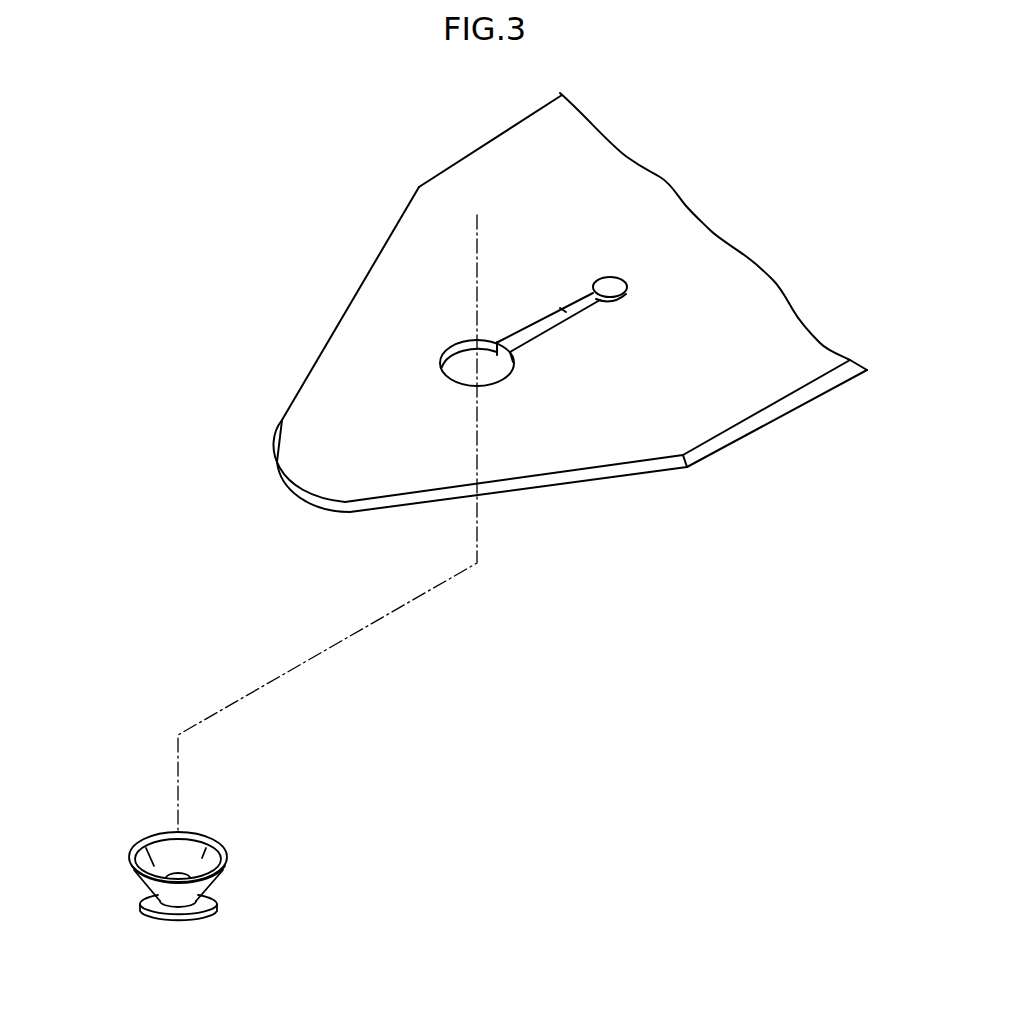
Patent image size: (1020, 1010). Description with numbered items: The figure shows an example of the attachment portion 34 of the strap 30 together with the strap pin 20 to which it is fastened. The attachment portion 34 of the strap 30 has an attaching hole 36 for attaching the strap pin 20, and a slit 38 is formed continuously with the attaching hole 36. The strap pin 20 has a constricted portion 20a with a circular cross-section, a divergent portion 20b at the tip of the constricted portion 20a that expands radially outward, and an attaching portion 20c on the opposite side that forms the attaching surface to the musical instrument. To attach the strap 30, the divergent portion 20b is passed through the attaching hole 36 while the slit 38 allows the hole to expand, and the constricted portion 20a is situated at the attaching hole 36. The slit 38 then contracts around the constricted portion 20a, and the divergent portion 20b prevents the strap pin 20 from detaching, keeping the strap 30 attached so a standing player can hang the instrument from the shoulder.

The strap 30 is at (410, 157).
The attachment portion 34 is at (418, 262).
The attaching hole 36 is at (460, 348).
The slit 38 is at (570, 302).
The strap pin 20 is at (152, 830).
The constricted portion 20a is at (198, 902).
The divergent portion 20b is at (227, 857).
The attaching portion 20c is at (140, 907).